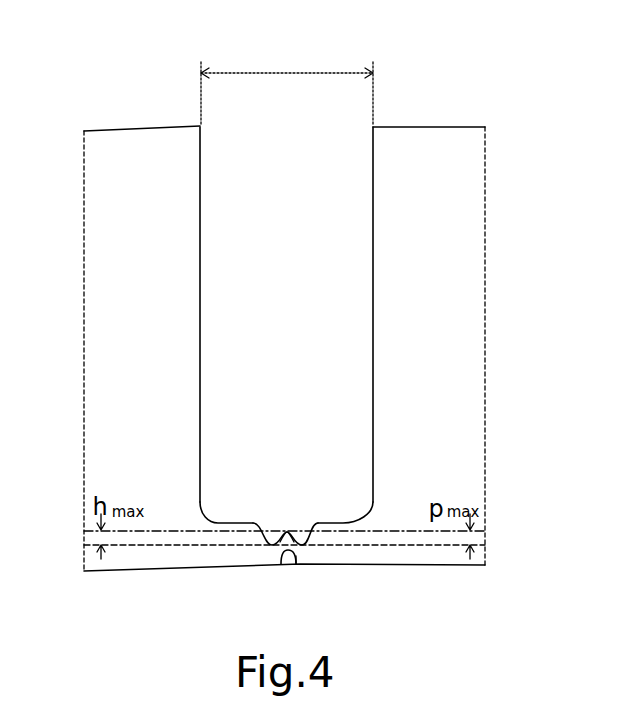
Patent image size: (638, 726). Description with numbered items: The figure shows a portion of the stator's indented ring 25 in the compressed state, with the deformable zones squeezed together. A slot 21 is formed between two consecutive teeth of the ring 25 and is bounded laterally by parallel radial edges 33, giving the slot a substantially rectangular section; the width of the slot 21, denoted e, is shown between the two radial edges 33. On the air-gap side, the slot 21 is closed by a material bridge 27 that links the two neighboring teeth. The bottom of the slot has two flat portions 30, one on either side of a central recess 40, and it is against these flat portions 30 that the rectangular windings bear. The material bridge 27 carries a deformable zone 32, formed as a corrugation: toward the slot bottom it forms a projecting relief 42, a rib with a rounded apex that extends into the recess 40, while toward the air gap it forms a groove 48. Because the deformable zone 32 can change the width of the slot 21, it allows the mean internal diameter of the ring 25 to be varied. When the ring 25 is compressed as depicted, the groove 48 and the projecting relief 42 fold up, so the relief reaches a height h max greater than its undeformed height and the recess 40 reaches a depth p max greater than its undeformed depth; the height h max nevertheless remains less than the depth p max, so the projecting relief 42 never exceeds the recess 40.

The slot 21 is at (345, 123).
The indented ring 25 is at (453, 165).
The radial edge 33 is at (373, 289).
The flat portion 30 is at (233, 523).
The projecting relief 42 is at (287, 532).
The material bridge 27 is at (238, 546).
The groove 48 is at (283, 556).
The deformable zone 32 is at (298, 556).
The recess 40 is at (313, 535).